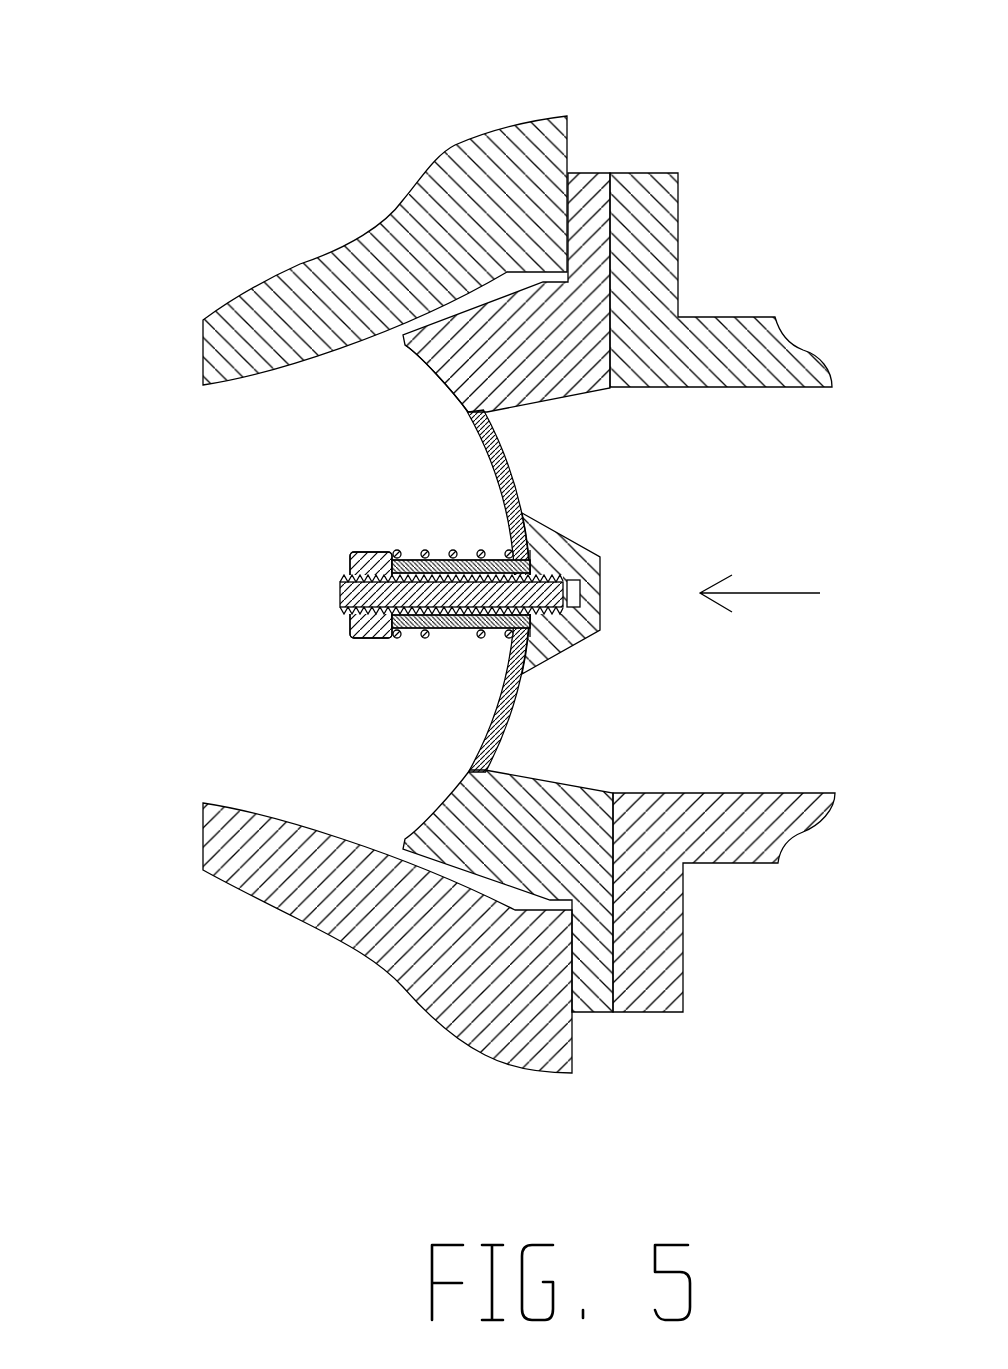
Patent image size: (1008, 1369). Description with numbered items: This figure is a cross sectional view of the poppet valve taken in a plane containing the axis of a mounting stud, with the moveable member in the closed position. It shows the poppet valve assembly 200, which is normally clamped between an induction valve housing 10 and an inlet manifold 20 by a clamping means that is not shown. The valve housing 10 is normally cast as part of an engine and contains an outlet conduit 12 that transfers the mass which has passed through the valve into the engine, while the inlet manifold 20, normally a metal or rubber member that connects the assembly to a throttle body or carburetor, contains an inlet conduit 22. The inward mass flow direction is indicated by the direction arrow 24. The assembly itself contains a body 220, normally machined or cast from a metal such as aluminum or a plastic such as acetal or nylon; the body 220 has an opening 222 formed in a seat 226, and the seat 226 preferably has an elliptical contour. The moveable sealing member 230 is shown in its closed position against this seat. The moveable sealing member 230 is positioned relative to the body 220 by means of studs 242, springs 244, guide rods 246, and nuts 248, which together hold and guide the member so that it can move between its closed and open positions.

The induction valve housing 10 is at (418, 178).
The inlet manifold 20 is at (695, 315).
The poppet valve assembly 200 is at (608, 142).
The body 220 is at (592, 1018).
The opening 222 is at (532, 463).
The seat 226 is at (435, 378).
The moveable sealing member 230 is at (478, 719).
The studs 242 is at (335, 602).
The springs 244 is at (455, 640).
The guide rods 246 is at (510, 618).
The nuts 248 is at (357, 562).
The outlet conduit 12 is at (84, 492).
The inlet conduit 22 is at (766, 490).
The direction arrow 24 is at (760, 578).